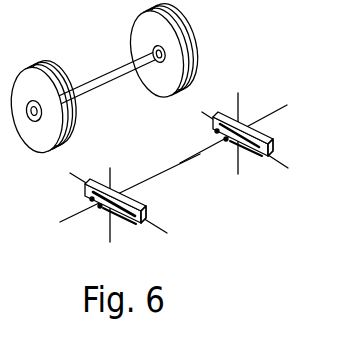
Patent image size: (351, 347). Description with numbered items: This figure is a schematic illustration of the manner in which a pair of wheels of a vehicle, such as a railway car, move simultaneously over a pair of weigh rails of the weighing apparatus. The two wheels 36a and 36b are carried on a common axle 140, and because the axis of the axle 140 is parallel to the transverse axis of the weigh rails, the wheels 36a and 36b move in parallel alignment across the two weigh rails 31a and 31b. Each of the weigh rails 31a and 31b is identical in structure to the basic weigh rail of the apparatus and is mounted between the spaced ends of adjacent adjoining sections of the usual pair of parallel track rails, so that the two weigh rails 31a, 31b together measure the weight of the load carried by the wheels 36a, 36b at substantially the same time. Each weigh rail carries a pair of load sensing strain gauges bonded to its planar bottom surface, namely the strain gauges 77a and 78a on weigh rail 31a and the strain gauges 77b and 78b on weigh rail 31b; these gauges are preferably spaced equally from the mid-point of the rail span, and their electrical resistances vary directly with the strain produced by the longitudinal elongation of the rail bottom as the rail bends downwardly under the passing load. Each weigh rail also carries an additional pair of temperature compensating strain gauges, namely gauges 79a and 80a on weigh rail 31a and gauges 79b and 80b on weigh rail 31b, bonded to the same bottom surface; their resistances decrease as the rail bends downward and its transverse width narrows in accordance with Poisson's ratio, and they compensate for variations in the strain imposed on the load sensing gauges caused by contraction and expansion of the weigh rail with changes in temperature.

The wheel 36a is at (44, 138).
The wheel 36b is at (197, 47).
The common axle 140 is at (116, 68).
The weigh rail 31a is at (119, 184).
The weigh rail 31b is at (249, 117).
The load sensing strain gauge 77a is at (100, 207).
The load sensing strain gauge 77b is at (225, 140).
The load sensing strain gauge 78a is at (123, 224).
The load sensing strain gauge 78b is at (251, 158).
The temperature compensating strain gauge 79a is at (91, 199).
The temperature compensating strain gauge 79b is at (216, 132).
The temperature compensating strain gauge 80a is at (138, 226).
The temperature compensating strain gauge 80b is at (270, 158).